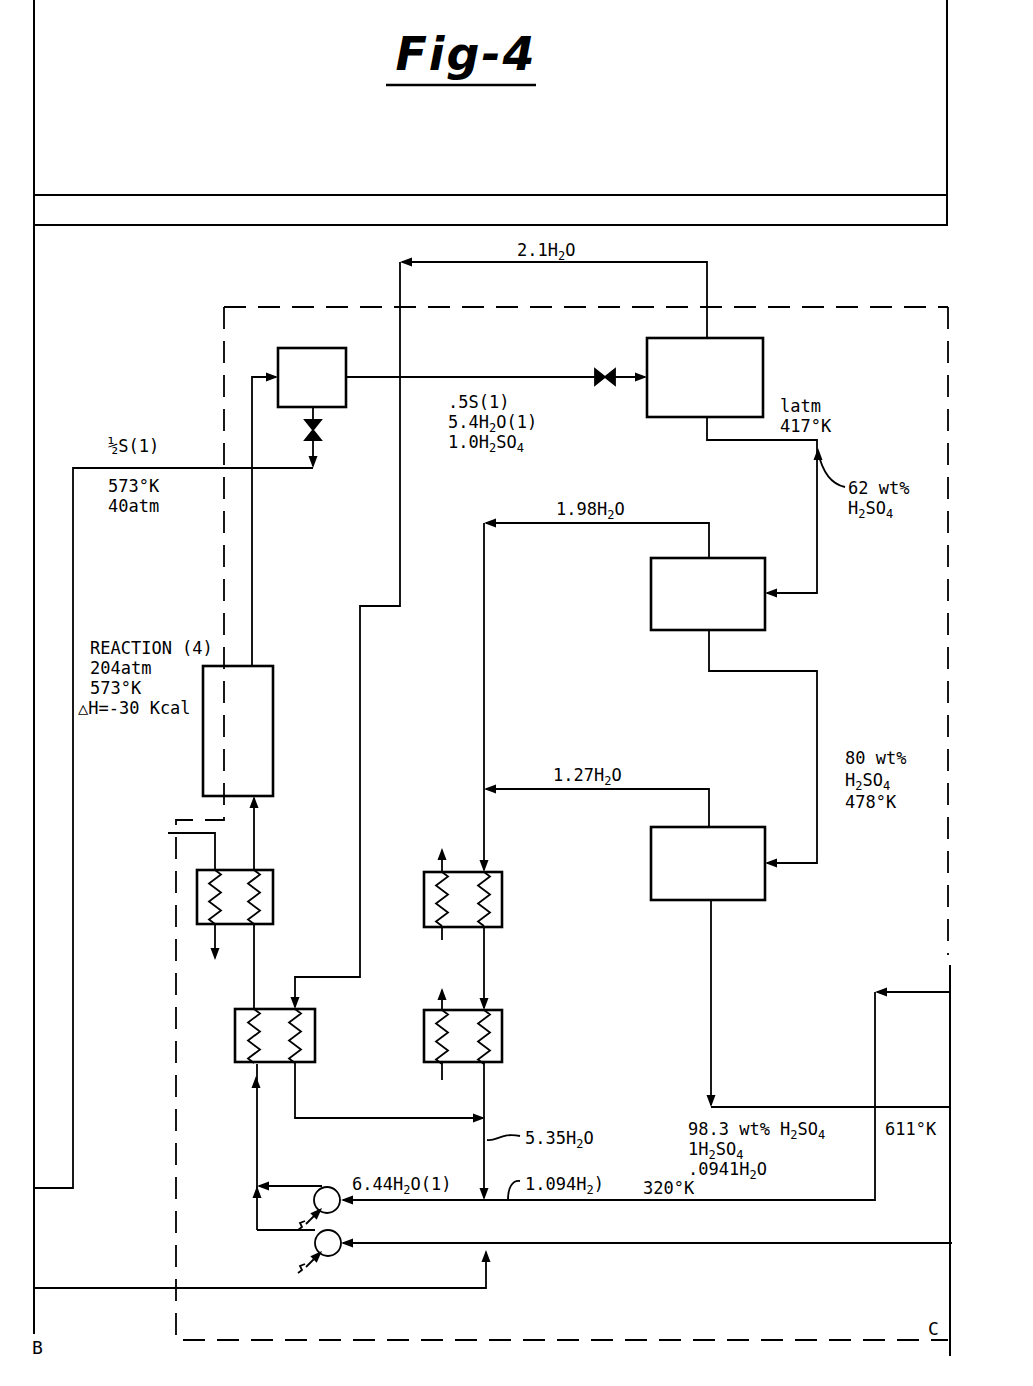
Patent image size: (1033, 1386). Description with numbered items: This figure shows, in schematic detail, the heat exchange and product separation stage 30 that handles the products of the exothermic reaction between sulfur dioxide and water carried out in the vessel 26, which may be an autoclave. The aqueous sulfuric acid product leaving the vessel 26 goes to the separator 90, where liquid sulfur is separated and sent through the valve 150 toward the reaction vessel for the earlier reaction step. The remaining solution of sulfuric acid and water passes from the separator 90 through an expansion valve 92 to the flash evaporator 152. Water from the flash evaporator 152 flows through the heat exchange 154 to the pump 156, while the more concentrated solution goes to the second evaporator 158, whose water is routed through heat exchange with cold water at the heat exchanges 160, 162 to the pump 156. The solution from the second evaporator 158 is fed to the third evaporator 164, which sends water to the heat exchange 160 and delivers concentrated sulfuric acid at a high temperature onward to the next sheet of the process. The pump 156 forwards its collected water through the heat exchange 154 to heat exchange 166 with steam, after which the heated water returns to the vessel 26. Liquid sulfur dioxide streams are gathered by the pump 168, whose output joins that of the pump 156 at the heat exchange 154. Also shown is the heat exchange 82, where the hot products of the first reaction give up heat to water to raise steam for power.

The heat exchange and product separation stage 30 is at (320, 258).
The separator 90 is at (340, 348).
The throttle valve 92 is at (605, 368).
The valve 150 is at (322, 430).
The flash evaporator 152 is at (763, 345).
The second evaporator 158 is at (755, 558).
The third evaporator 164 is at (755, 827).
The vessel 26 is at (246, 740).
The heat exchange 82 is at (166, 845).
The heat exchange 166 is at (273, 870).
The heat exchange 154 is at (315, 1015).
The heat exchange 160 is at (503, 872).
The heat exchange 162 is at (503, 1010).
The pump 156 is at (337, 1188).
The pump 168 is at (334, 1255).